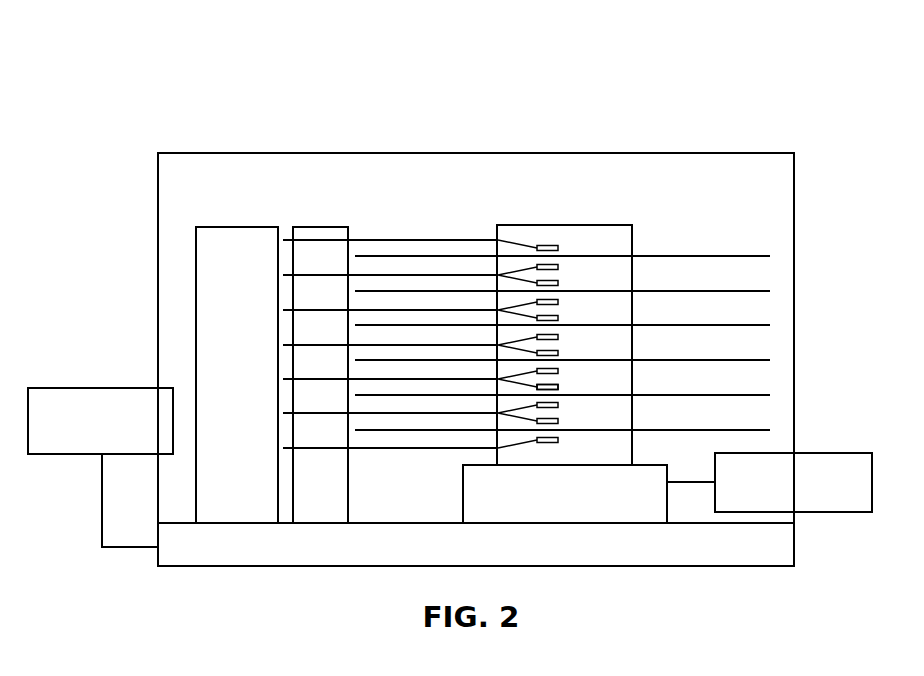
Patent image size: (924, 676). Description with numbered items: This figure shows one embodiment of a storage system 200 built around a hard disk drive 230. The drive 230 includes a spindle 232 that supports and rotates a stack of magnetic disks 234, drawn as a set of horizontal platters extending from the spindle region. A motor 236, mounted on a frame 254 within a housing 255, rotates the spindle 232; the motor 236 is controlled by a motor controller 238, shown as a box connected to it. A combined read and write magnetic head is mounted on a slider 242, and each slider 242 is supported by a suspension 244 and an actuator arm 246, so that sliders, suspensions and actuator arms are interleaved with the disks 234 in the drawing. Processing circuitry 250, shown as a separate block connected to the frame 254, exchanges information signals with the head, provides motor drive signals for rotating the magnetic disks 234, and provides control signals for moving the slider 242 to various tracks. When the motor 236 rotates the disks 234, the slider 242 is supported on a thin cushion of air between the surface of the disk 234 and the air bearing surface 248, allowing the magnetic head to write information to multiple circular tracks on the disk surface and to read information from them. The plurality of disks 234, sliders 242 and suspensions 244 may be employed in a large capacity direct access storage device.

The storage system 200 is at (132, 105).
The hard disk drive 230 is at (689, 221).
The spindle 232 is at (618, 225).
The magnetic disks 234 is at (797, 405).
The motor 236 is at (578, 506).
The motor controller 238 is at (830, 512).
The slider 242 is at (557, 266).
The suspension 244 is at (527, 236).
The actuator arm 246 is at (462, 275).
The air bearing surface 248 is at (549, 391).
The processing circuitry 250 is at (73, 388).
The frame 254 is at (213, 567).
The housing 255 is at (732, 153).